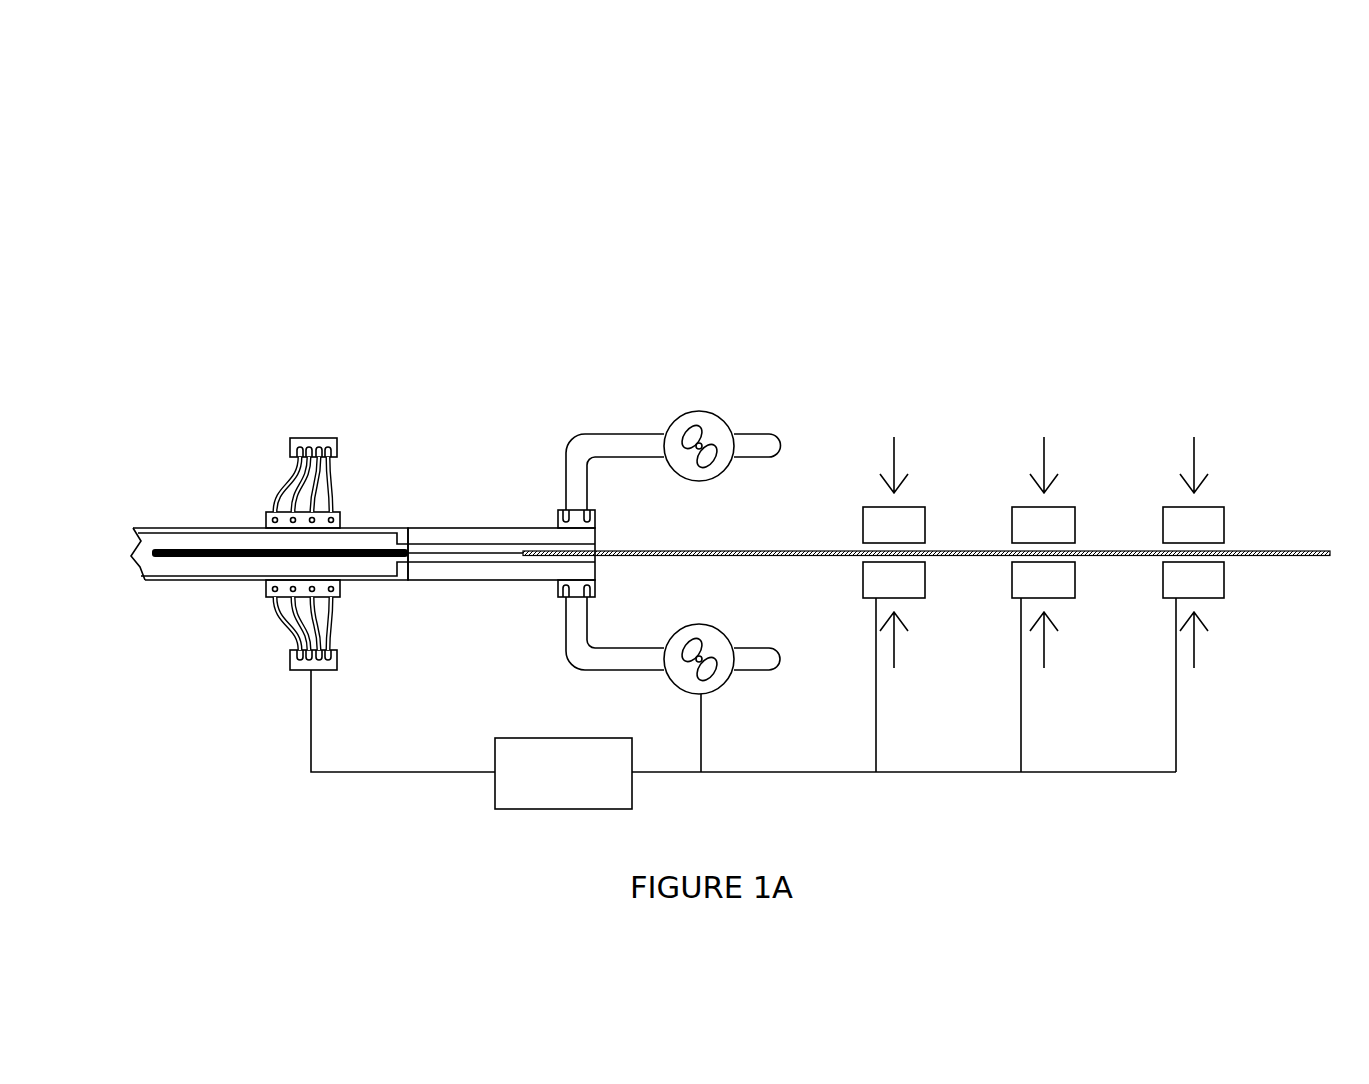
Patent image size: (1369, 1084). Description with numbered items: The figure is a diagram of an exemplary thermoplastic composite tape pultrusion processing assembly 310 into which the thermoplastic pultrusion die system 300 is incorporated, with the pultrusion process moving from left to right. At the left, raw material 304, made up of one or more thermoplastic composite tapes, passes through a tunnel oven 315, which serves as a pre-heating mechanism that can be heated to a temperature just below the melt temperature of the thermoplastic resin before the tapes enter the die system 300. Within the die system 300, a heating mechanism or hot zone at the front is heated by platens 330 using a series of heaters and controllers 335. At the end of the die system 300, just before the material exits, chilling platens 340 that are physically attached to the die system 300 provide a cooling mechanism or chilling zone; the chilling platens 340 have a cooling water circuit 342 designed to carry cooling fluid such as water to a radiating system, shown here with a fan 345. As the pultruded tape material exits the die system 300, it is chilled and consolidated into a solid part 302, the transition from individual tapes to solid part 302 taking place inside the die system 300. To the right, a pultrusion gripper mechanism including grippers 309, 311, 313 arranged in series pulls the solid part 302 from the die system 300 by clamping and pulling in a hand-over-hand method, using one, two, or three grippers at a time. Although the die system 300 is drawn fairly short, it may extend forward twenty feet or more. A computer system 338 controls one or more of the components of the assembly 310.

The thermoplastic composite tape pultrusion processing assembly 310 is at (245, 325).
The tunnel oven 315 is at (243, 528).
The raw material 304 is at (223, 548).
The platens 330 is at (263, 510).
The heaters and controllers 335 is at (308, 438).
The thermoplastic pultrusion die system 300 is at (525, 527).
The chilling platens 340 is at (557, 500).
The cooling water circuit 342 is at (602, 430).
The fan 345 is at (705, 410).
The solid part 302 is at (785, 543).
The gripper 309 is at (918, 507).
The gripper 311 is at (1062, 507).
The gripper 313 is at (1171, 507).
The computer system 338 is at (495, 787).